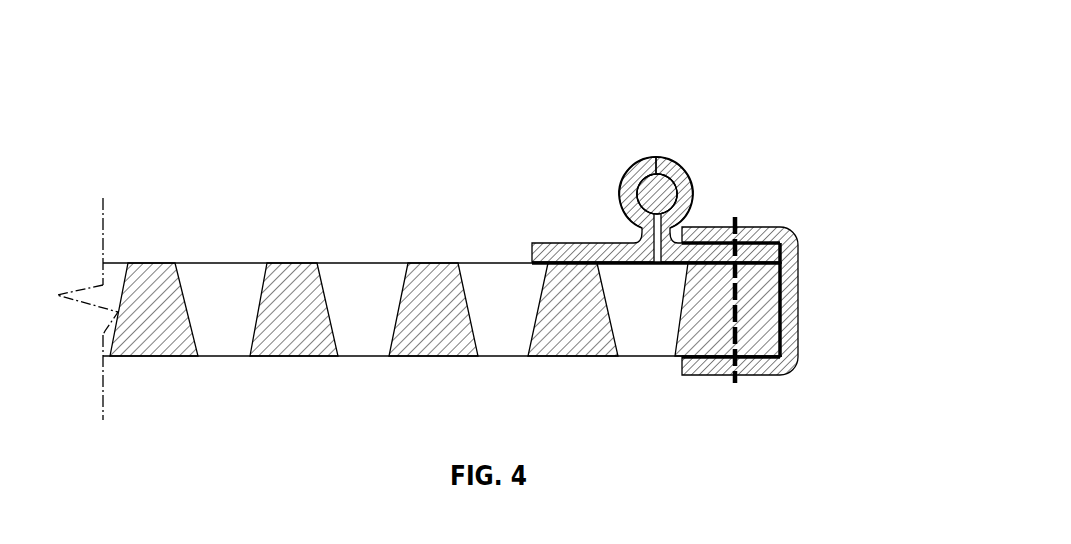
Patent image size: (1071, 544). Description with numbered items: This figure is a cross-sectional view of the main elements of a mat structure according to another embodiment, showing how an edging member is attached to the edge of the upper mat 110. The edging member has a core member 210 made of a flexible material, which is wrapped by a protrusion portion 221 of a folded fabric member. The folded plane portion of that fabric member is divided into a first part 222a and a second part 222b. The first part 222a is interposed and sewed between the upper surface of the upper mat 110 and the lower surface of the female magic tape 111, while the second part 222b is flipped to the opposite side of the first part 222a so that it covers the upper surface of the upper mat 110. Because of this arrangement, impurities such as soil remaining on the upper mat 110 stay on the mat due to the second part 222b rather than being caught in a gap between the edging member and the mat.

The upper mat 110 is at (419, 277).
The female magic tape 111 is at (798, 303).
The core member 210 is at (655, 180).
The protrusion portion 221 is at (631, 172).
The first part 222a is at (749, 232).
The second part 222b is at (555, 244).